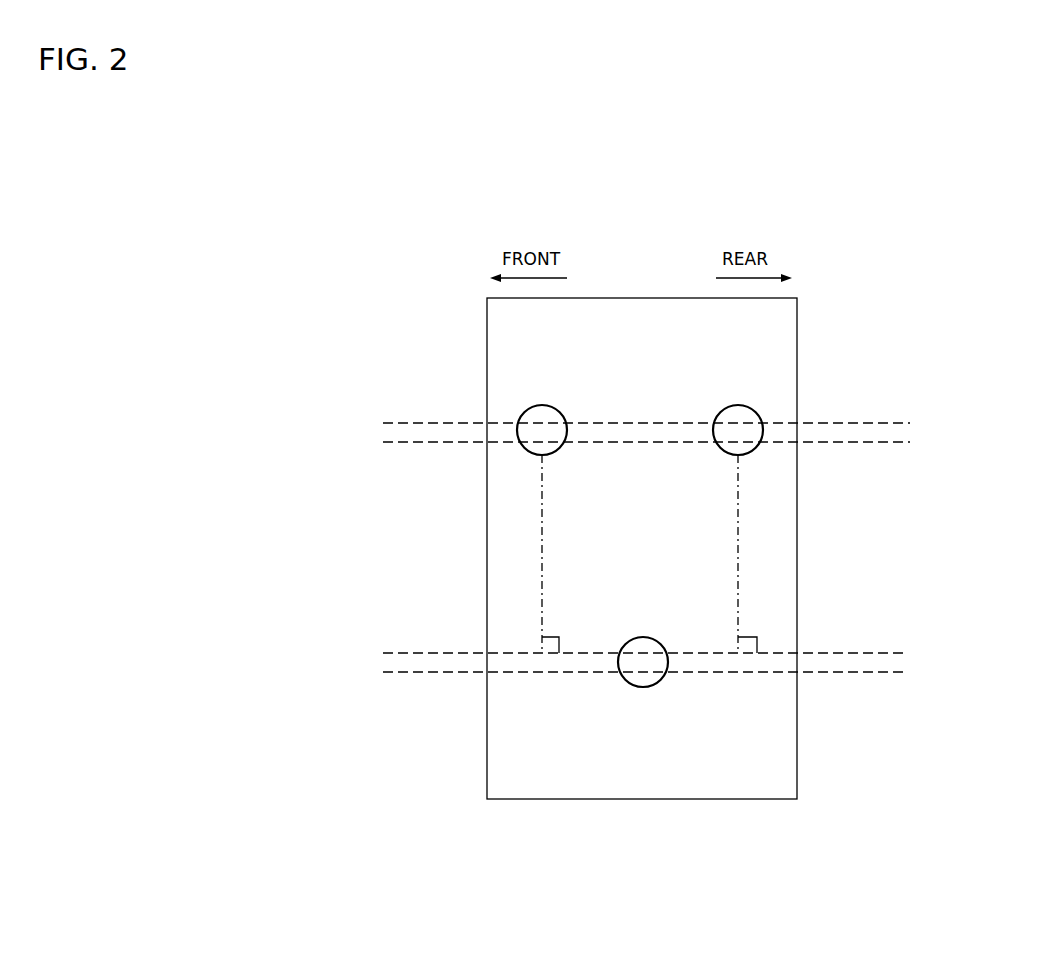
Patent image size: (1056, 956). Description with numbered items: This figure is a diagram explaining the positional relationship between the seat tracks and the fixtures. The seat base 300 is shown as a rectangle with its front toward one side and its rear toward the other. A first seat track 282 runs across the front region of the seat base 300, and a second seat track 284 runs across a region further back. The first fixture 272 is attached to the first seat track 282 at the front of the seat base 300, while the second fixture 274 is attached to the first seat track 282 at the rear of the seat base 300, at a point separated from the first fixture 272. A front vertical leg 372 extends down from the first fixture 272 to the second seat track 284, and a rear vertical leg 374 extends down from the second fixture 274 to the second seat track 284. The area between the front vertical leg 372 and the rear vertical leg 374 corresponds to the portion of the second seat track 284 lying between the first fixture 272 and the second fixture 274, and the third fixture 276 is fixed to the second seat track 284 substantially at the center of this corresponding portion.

The seat base 300 is at (678, 298).
The first fixture 272 is at (527, 418).
The second fixture 274 is at (745, 423).
The third fixture 276 is at (633, 683).
The first seat track 282 is at (867, 433).
The second seat track 284 is at (885, 660).
The front vertical leg 372 is at (542, 650).
The rear vertical leg 374 is at (738, 653).